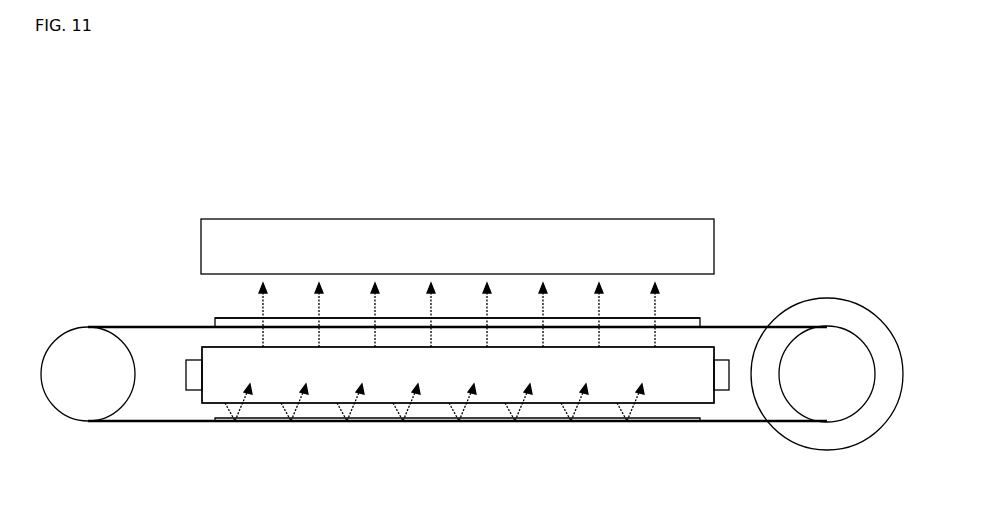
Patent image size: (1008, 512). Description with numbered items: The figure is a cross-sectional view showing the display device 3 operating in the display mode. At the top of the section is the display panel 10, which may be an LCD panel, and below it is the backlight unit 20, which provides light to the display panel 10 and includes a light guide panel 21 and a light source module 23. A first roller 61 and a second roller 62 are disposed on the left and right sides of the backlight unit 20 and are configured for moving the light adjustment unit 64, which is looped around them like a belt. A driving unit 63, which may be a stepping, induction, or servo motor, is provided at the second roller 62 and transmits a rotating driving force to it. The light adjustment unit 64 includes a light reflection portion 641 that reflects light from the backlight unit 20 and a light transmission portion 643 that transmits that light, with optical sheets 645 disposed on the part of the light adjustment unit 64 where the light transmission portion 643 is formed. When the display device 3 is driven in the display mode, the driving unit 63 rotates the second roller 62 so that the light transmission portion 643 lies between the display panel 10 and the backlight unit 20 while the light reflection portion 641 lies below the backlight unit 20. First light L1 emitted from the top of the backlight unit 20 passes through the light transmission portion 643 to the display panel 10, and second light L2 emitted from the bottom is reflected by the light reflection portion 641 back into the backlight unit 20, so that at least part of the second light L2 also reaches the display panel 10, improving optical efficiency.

The display device 3 is at (160, 142).
The display panel 10 is at (460, 226).
The backlight unit 20 is at (772, 227).
The light guide panel 21 is at (697, 360).
The light source module 23 is at (723, 362).
The first roller 61 is at (92, 395).
The second roller 62 is at (818, 400).
The driving unit 63 is at (826, 308).
The light adjustment unit 64 is at (150, 423).
The light reflection portion 641 is at (287, 423).
The light transmission portion 643 is at (230, 317).
The optical sheets 645 is at (296, 325).
The first light L1 is at (327, 307).
The second light L2 is at (362, 423).